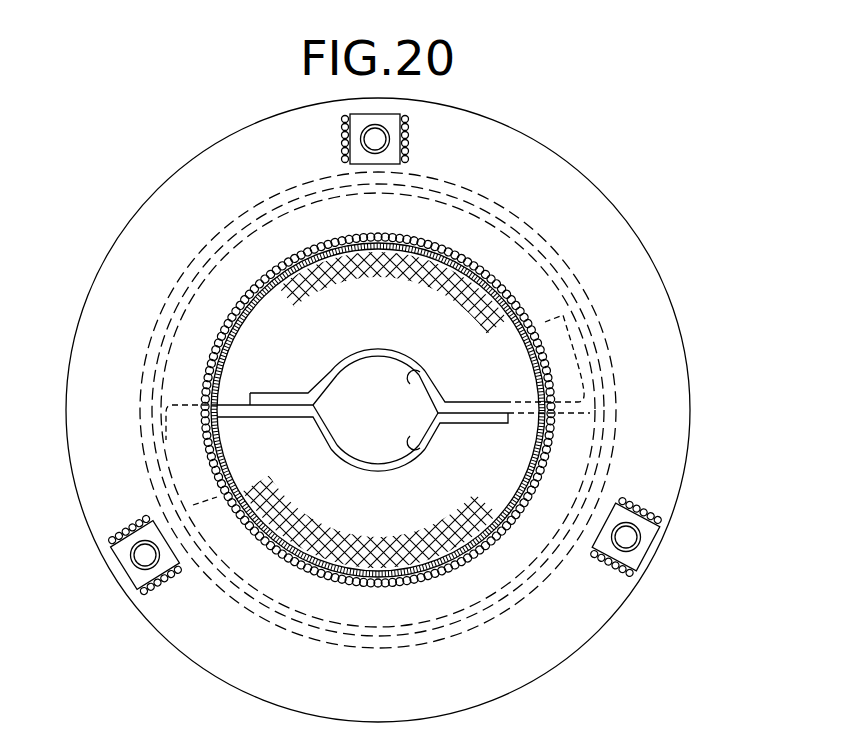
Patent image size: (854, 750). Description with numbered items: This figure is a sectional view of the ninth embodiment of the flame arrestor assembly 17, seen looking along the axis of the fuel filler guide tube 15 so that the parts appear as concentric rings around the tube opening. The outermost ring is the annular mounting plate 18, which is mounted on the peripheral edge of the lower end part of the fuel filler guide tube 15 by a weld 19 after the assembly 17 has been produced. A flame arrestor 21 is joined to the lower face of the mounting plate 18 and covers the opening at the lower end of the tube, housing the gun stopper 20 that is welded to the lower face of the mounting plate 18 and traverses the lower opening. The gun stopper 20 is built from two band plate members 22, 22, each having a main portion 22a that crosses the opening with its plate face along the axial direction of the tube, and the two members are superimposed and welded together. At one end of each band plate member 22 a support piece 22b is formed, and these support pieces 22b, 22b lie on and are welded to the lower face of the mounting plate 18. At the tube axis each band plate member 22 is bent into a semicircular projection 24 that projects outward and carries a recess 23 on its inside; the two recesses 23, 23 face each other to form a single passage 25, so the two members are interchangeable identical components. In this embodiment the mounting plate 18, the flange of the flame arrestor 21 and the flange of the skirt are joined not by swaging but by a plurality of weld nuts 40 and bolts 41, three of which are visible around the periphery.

The fuel filler guide tube 15 is at (363, 250).
The flame arrestor assembly 17 is at (141, 269).
The mounting plate 18 is at (183, 210).
The weld 19 is at (500, 275).
The gun stopper 20 is at (510, 415).
The flame arrestor 21 is at (520, 308).
The band plate member 22 is at (490, 402).
The main portion 22a is at (278, 400).
The support piece 22b is at (570, 352).
The recess 23 is at (414, 380).
The projection 24 is at (378, 346).
The passage 25 is at (394, 414).
The weld nut 40 is at (393, 117).
The bolt 41 is at (372, 138).